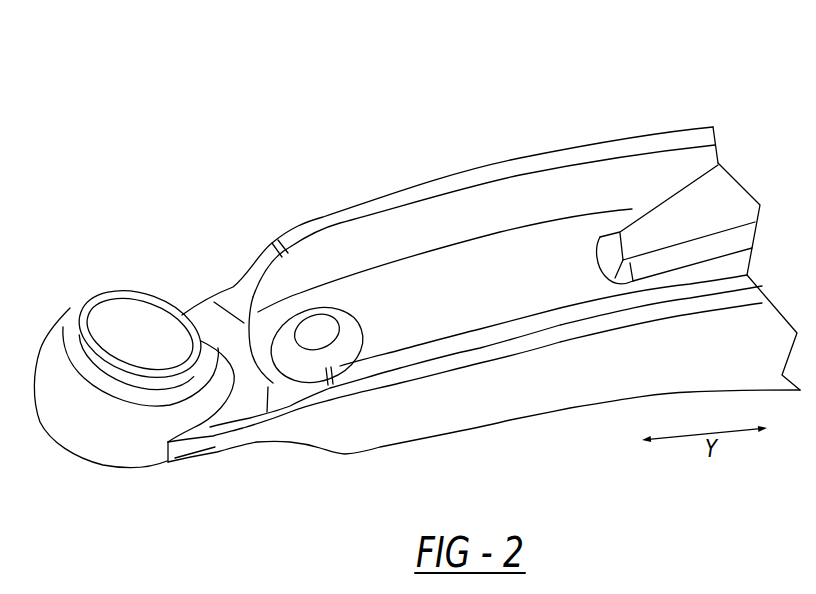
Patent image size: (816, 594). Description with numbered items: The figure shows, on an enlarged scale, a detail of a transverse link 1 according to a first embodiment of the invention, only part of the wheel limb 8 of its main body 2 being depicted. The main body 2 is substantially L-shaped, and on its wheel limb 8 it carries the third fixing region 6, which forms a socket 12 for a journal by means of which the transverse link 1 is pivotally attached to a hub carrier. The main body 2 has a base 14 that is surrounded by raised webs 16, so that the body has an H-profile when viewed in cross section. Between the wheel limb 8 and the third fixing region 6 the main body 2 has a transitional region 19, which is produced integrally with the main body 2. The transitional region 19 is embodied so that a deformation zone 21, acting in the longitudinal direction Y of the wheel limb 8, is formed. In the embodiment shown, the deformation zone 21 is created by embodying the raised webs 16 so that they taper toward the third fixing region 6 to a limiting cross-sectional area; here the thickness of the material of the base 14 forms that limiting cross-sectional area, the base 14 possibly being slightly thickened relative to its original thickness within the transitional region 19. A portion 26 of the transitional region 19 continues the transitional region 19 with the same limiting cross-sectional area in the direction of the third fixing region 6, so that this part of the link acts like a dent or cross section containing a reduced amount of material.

The transverse link 1 is at (427, 139).
The main body 2 is at (715, 182).
The third fixing region 6 is at (103, 420).
The wheel limb 8 is at (667, 142).
The socket 12 is at (107, 300).
The base 14 is at (512, 255).
The raised webs 16 is at (325, 214).
The transitional region 19 is at (190, 265).
The deformation zone 21 is at (337, 482).
The portion 26 is at (205, 448).